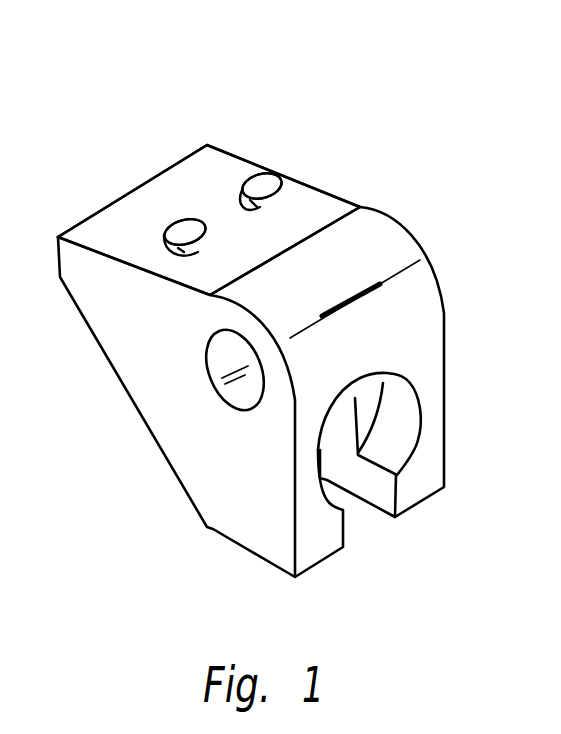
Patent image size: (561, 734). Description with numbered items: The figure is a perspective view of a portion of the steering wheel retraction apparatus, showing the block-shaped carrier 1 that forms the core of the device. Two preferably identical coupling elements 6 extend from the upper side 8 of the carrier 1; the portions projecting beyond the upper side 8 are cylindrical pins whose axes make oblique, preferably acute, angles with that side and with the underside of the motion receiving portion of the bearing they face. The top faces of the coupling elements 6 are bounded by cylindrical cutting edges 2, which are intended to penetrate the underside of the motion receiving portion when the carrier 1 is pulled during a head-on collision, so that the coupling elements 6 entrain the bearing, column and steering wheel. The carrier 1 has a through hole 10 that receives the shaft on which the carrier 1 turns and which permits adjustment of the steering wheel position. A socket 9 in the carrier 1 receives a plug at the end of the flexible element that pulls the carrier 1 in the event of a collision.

The carrier 1 is at (430, 320).
The cylindrical cutting edges 2 is at (182, 211).
The coupling elements 6 is at (330, 195).
The upper side 8 is at (120, 222).
The socket 9 is at (397, 433).
The through hole 10 is at (223, 357).